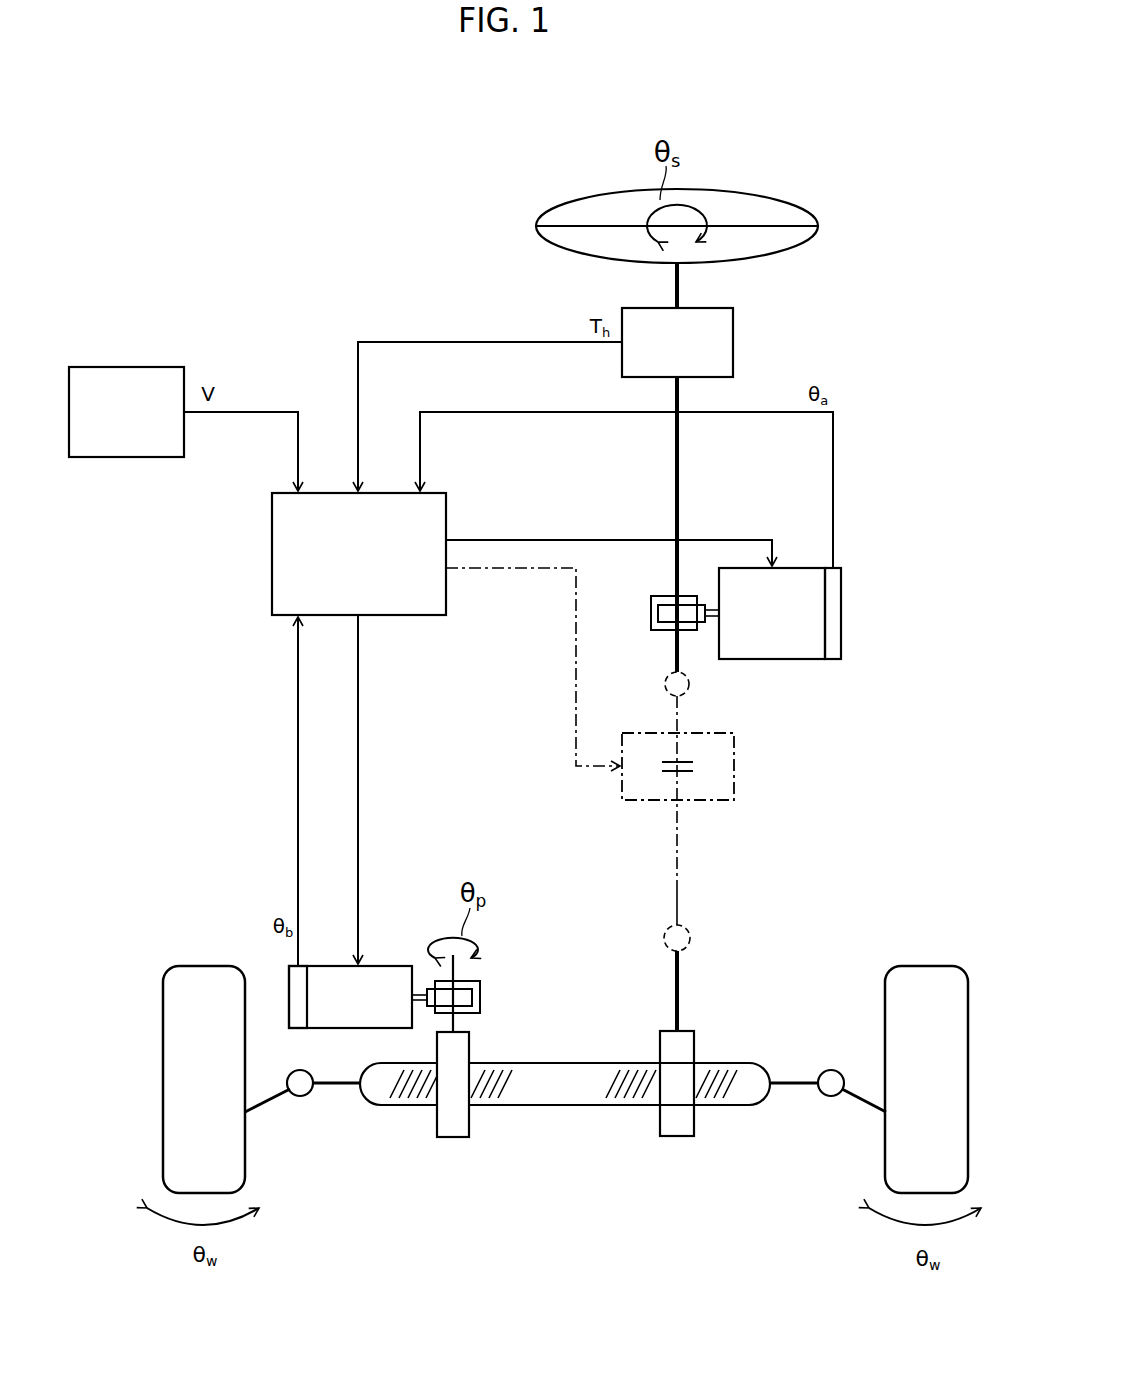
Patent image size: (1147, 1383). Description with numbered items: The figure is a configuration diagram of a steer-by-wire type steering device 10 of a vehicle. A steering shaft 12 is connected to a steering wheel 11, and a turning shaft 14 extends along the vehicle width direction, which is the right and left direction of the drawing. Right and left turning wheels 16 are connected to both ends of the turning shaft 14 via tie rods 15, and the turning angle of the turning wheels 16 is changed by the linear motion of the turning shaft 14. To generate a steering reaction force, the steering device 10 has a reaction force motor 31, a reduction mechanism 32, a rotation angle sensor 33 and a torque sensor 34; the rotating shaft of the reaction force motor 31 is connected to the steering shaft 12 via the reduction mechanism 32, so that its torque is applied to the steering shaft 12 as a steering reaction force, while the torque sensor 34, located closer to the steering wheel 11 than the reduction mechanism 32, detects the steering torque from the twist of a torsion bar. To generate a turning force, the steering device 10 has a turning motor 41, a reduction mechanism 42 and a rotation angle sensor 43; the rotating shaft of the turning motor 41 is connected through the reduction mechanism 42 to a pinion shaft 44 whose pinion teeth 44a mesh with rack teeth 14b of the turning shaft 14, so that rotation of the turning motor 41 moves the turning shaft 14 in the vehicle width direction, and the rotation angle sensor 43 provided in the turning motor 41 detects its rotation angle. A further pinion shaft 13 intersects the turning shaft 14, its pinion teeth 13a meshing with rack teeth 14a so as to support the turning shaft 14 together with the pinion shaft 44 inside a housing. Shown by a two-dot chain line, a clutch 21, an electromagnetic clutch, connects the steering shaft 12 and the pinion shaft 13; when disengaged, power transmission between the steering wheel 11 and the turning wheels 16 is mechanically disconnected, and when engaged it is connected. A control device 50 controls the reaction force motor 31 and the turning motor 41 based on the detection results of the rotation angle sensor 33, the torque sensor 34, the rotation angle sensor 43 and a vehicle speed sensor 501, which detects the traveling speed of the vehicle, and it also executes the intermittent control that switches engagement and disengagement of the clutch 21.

The steering device 10 is at (838, 192).
The steering wheel 11 is at (766, 192).
The steering shaft 12 is at (681, 282).
The pinion shaft 13 is at (676, 997).
The pinion teeth 13a is at (682, 1138).
The turning shaft 14 is at (565, 1116).
The rack teeth 14a is at (636, 1098).
The rack teeth 14b is at (488, 1096).
The tie rod 15 is at (334, 1088).
The turning wheel 16 is at (246, 1160).
The clutch 21 is at (735, 775).
The reaction force motor 31 is at (803, 661).
The reduction mechanism 32 is at (646, 609).
The rotation angle sensor 33 is at (831, 661).
The torque sensor 34 is at (735, 340).
The turning motor 41 is at (394, 966).
The reduction mechanism 42 is at (488, 1004).
The rotation angle sensor 43 is at (288, 1010).
The pinion shaft 44 is at (458, 963).
The pinion teeth 44a is at (455, 1139).
The control device 50 is at (434, 617).
The vehicle speed sensor 501 is at (127, 367).